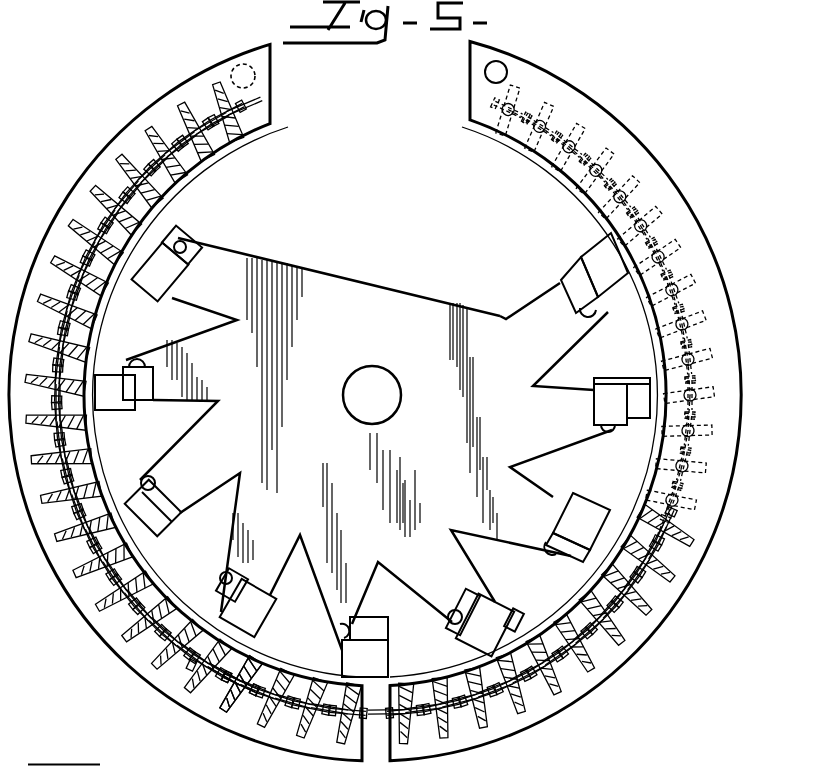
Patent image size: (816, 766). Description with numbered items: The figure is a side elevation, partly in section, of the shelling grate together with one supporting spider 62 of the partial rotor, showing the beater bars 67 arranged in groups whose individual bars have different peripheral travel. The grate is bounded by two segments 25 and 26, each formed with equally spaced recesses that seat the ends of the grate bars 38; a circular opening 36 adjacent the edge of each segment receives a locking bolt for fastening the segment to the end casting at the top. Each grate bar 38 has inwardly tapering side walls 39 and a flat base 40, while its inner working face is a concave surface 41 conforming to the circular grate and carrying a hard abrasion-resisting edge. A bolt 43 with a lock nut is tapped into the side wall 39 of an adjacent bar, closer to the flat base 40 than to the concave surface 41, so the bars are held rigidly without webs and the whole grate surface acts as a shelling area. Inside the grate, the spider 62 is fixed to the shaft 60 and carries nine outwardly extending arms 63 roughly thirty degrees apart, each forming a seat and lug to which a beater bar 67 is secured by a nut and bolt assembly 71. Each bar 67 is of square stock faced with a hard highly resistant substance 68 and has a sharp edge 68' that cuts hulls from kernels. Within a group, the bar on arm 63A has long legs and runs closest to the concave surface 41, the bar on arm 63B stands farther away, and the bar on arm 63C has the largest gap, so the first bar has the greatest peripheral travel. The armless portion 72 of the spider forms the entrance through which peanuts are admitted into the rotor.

The segment 25 is at (100, 154).
The segment 26 is at (558, 70).
The circular opening 36 is at (241, 52).
The grate bar 38 is at (569, 661).
The tapering side wall 39 is at (184, 672).
The flat base 40 is at (178, 670).
The concave surface 41 is at (153, 588).
The bolt 43 is at (570, 122).
The shaft 60 is at (379, 368).
The spider 62 is at (372, 443).
The arm 63 is at (222, 264).
The arm 63A is at (520, 301).
The arm 63B is at (572, 386).
The arm 63C is at (548, 497).
The beater bar 67 is at (602, 244).
The hard highly resistant substance 68 is at (503, 622).
The edge 68' is at (531, 622).
The nut and bolt assembly 71 is at (453, 628).
The portion of spider without arms 72 is at (378, 290).